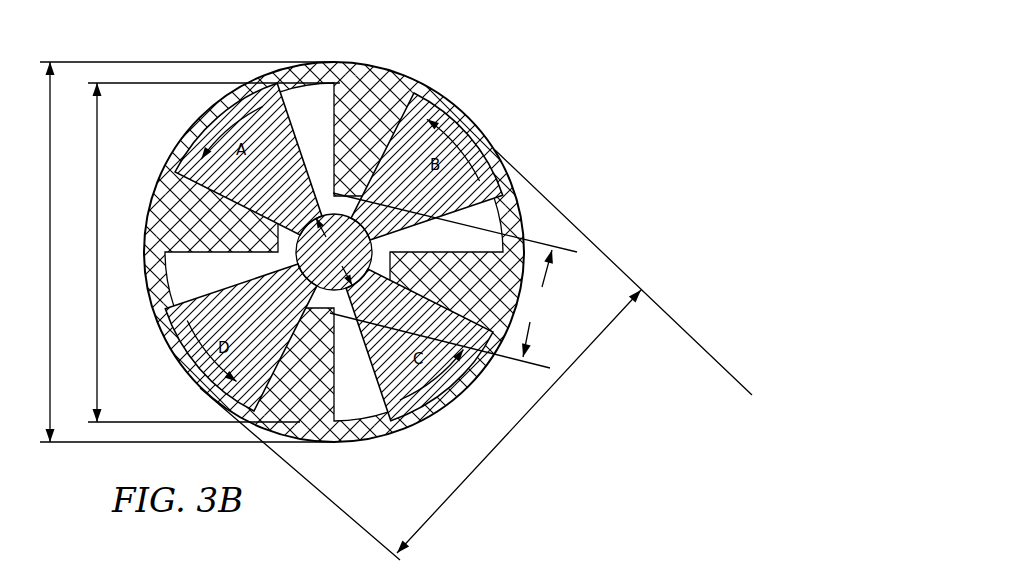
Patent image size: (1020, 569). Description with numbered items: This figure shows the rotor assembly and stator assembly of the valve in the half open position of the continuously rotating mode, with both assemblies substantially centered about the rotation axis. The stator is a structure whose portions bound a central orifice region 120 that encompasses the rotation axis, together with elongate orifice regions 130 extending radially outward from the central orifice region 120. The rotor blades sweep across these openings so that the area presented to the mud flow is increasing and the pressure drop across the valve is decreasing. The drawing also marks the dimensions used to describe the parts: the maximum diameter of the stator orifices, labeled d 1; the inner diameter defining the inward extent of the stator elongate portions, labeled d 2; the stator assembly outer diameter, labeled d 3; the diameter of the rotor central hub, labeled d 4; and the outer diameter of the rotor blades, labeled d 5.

The central orifice region 120 is at (337, 207).
The elongate orifice regions 130 is at (320, 88).
The diameter d1 of inner channel arcs 1 is at (212, 252).
The width d2 between blade edges 2 is at (453, 280).
The outer diameter d3 3 is at (184, 252).
The hub diameter d4 4 is at (334, 251).
The tangent distance d5 5 is at (476, 355).